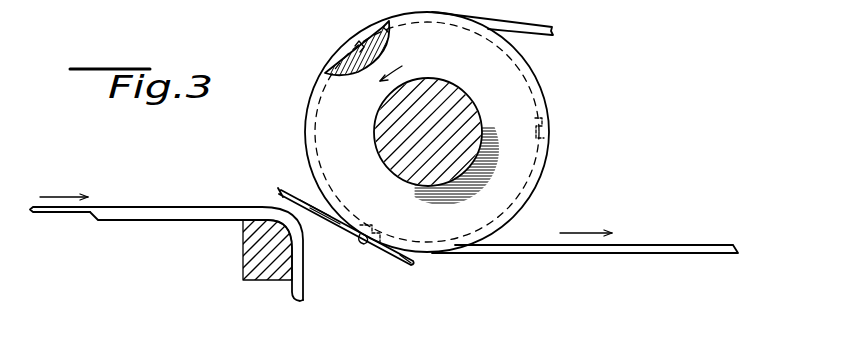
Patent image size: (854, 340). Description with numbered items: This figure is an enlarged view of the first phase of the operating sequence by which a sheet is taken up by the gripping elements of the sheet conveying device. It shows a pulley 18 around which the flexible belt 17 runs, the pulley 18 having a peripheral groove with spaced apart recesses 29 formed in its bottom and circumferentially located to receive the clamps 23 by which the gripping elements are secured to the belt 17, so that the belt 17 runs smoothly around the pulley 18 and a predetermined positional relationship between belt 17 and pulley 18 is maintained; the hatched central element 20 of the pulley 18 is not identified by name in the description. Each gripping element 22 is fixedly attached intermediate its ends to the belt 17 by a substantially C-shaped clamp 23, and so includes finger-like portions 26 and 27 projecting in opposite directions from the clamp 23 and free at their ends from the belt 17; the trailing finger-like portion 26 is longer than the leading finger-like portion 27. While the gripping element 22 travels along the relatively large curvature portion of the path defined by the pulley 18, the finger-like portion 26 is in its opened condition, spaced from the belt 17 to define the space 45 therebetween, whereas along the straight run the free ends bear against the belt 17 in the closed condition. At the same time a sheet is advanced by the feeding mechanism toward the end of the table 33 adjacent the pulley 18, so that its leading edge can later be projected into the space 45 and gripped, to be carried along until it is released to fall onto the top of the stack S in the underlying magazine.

The belt 17 is at (585, 253).
The pulley 18 is at (517, 86).
The core 20 is at (398, 135).
The gripping element 22 is at (323, 226).
The clamp 23 is at (365, 245).
The finger-like portion 26 is at (278, 190).
The finger-like portion 27 is at (412, 268).
The recess 29 is at (358, 42).
The table 33 is at (125, 213).
The space 45 is at (322, 208).
The stack S is at (130, 170).